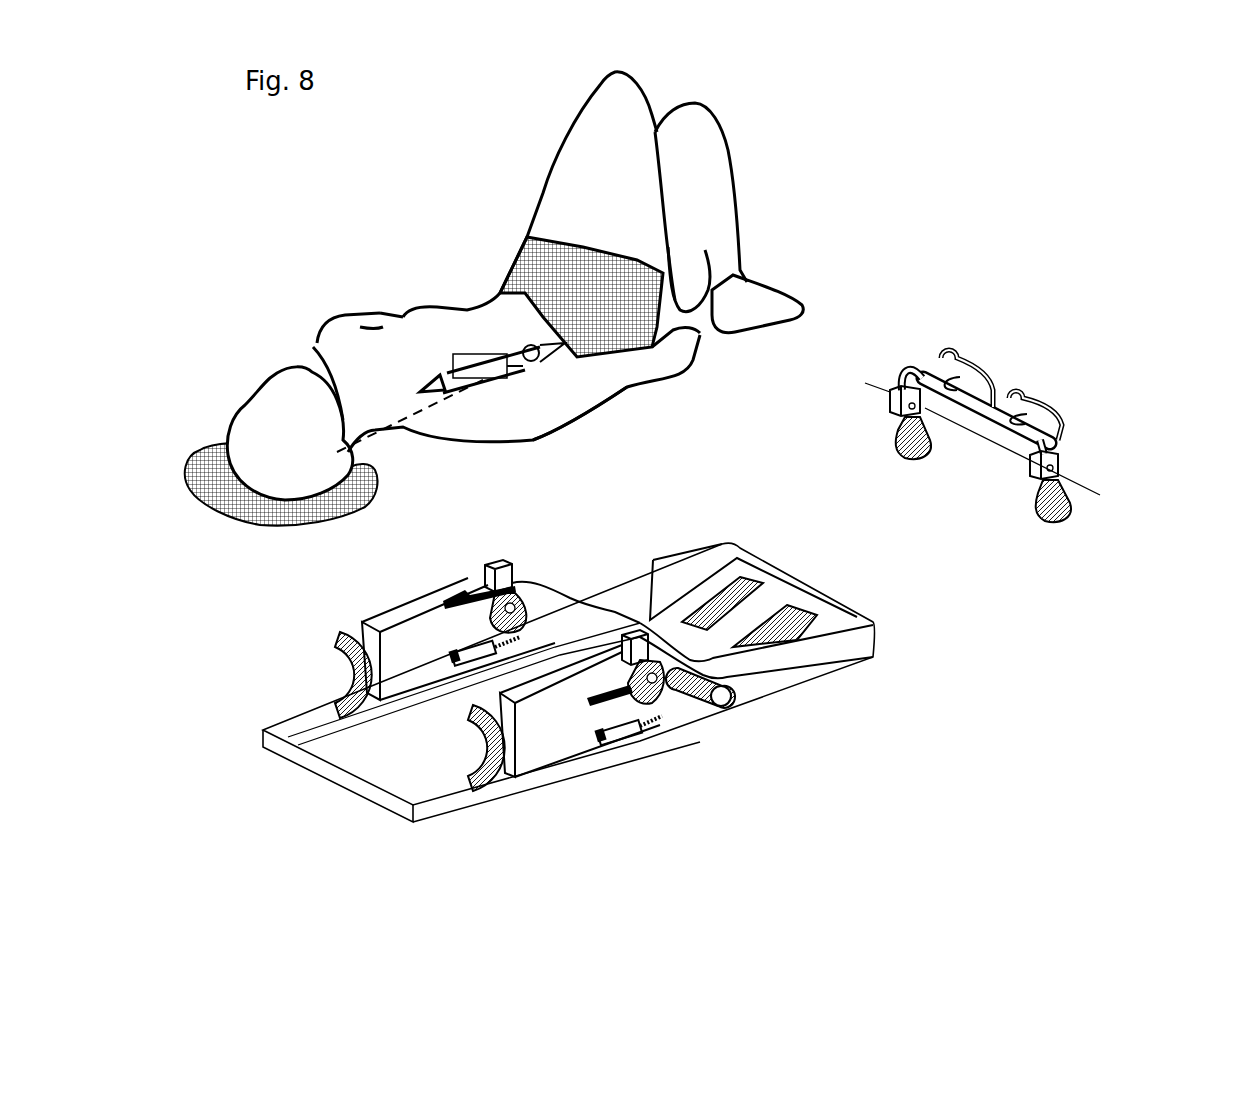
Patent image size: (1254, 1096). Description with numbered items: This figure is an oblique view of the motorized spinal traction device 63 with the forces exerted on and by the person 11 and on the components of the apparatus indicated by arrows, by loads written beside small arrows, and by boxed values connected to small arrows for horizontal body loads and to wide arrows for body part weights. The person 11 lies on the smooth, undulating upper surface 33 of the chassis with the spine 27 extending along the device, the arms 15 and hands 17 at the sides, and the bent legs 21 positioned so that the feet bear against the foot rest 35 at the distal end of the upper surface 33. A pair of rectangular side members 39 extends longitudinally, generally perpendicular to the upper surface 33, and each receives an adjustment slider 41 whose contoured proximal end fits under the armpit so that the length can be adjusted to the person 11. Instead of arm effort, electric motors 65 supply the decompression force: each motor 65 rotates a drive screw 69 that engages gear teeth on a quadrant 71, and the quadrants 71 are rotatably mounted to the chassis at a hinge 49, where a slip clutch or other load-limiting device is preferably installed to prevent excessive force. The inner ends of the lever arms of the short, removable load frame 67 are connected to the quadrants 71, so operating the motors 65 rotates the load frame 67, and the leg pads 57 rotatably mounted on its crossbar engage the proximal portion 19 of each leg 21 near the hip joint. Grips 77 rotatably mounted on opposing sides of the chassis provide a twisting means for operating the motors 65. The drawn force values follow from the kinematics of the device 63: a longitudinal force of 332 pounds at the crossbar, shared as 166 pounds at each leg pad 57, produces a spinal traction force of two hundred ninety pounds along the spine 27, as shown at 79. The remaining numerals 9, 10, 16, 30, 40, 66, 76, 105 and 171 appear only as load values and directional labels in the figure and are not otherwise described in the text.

The lateral support 9 is at (406, 297).
The head support 10 is at (292, 503).
The person 11 is at (240, 410).
The arms 15 is at (620, 377).
The vertical adjustment direction 16 is at (510, 307).
The hands 17 is at (702, 287).
The proximal portion 19 is at (667, 257).
The legs 21 is at (713, 167).
The spine 27 is at (377, 415).
The upward force 30 is at (362, 357).
The upper surface 33 is at (373, 775).
The foot rest 35 is at (827, 620).
The side members 39 is at (530, 762).
The adjustment direction 40 is at (450, 298).
The adjustment sliders 41 is at (507, 767).
The hinge 49 is at (670, 690).
The leg pads 57 is at (983, 380).
The spinal traction device 63 is at (860, 650).
The electric motors 65 is at (607, 733).
The downward force 66 is at (516, 445).
The load frame 67 is at (918, 357).
The drive screws 69 is at (640, 713).
The quadrants 71 is at (1060, 505).
The foot movement direction 76 is at (755, 340).
The grips 77 is at (723, 700).
The spinal traction force 79 is at (363, 347).
The support pad 105 is at (365, 348).
The leg pad force 166 is at (500, 253).
The lateral adjustment direction 171 is at (963, 360).
The crossbar force 332 is at (903, 409).